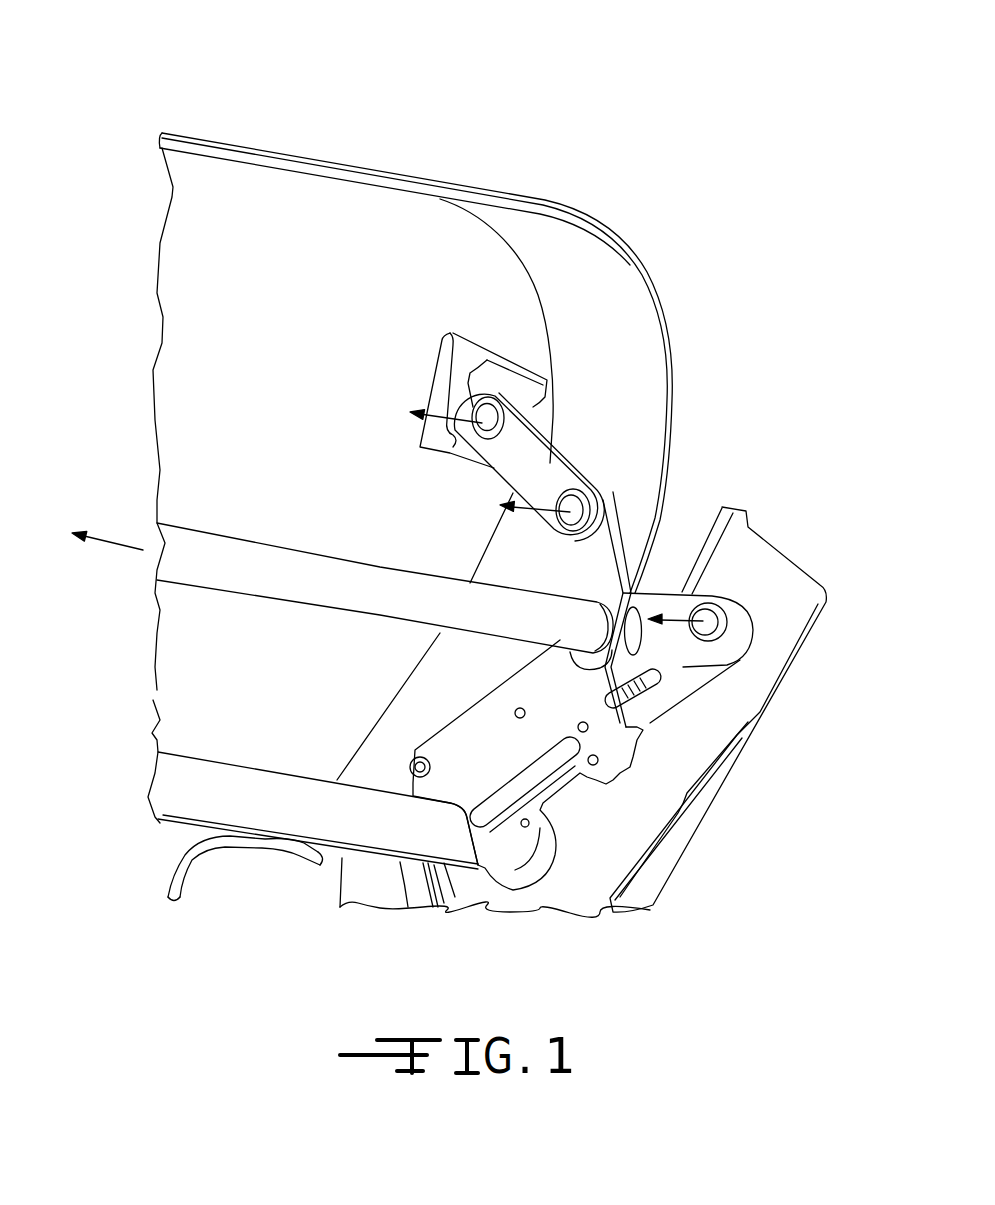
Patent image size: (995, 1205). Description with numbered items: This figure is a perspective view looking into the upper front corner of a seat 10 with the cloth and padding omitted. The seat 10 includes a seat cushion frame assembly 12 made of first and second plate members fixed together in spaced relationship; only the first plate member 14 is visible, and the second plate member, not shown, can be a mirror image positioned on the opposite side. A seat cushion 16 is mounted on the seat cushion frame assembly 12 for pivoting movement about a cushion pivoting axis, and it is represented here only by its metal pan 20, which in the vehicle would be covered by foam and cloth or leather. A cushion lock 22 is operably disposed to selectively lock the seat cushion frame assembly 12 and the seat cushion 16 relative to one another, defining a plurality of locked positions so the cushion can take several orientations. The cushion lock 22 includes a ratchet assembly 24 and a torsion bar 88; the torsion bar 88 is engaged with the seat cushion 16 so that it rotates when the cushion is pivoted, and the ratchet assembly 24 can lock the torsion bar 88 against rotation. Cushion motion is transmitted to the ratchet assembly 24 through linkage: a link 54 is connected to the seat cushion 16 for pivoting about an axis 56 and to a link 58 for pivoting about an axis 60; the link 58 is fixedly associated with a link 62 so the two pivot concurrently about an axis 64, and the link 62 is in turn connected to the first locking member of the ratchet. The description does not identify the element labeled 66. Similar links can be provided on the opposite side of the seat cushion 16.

The seat 10 is at (574, 146).
The seat cushion frame assembly 12 is at (766, 409).
The first plate member 14 is at (770, 587).
The seat cushion 16 is at (305, 126).
The metal pan 20 is at (433, 178).
The cushion lock 22 is at (362, 934).
The ratchet assembly 24 is at (588, 824).
The link 54 is at (535, 462).
The axis 56 is at (450, 343).
The link 58 is at (600, 560).
The axis 60 is at (547, 452).
The link 62 is at (672, 640).
The axis 64 is at (110, 545).
The pivot pin 66 is at (640, 552).
The torsion bar 88 is at (186, 566).